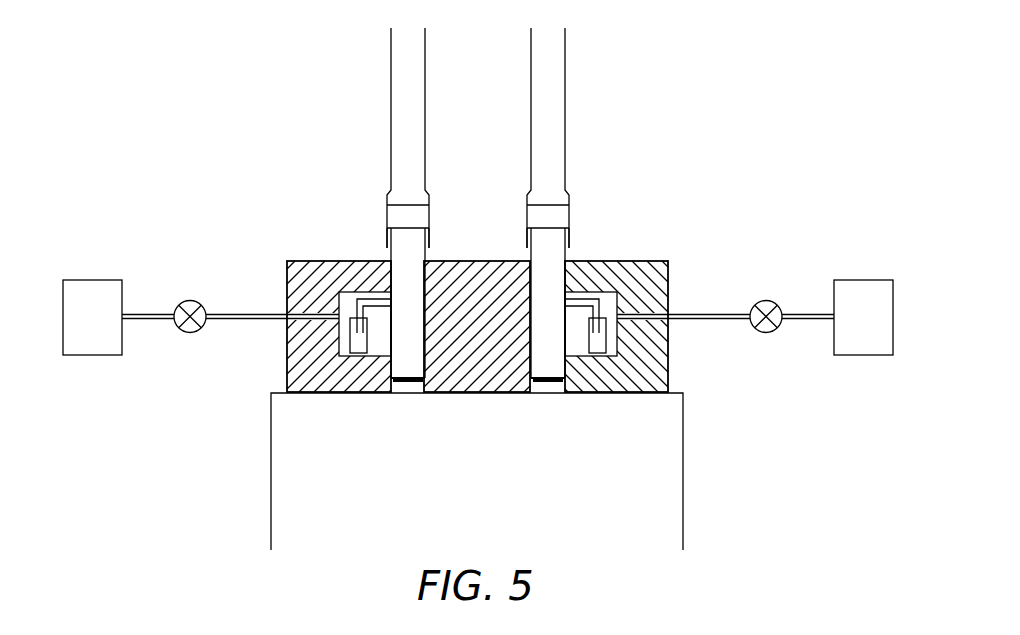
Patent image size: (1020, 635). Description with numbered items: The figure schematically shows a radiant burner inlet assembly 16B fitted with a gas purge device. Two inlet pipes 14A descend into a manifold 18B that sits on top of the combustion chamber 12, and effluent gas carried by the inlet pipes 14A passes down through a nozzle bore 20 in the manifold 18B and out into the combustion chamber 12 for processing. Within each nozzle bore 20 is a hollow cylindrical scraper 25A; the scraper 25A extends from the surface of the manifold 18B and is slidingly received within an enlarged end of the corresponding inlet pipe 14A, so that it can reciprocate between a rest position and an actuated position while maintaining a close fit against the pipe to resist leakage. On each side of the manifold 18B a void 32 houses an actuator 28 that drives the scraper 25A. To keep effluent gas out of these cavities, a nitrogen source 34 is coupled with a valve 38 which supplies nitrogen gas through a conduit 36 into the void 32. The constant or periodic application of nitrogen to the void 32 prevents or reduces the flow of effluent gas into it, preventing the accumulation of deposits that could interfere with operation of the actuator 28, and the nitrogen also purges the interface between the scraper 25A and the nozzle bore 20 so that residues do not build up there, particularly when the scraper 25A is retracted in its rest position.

The combustion chamber 12 is at (490, 528).
The inlet pipe 14A is at (391, 60).
The radiant burner inlet assembly 16B is at (280, 187).
The manifold 18B is at (290, 382).
The nozzle bore 20 is at (419, 384).
The scraper 25A is at (526, 257).
The actuator 28 is at (351, 343).
The void 32 is at (347, 297).
The nitrogen source 34 is at (92, 280).
The conduit 36 is at (250, 313).
The valve 38 is at (190, 300).